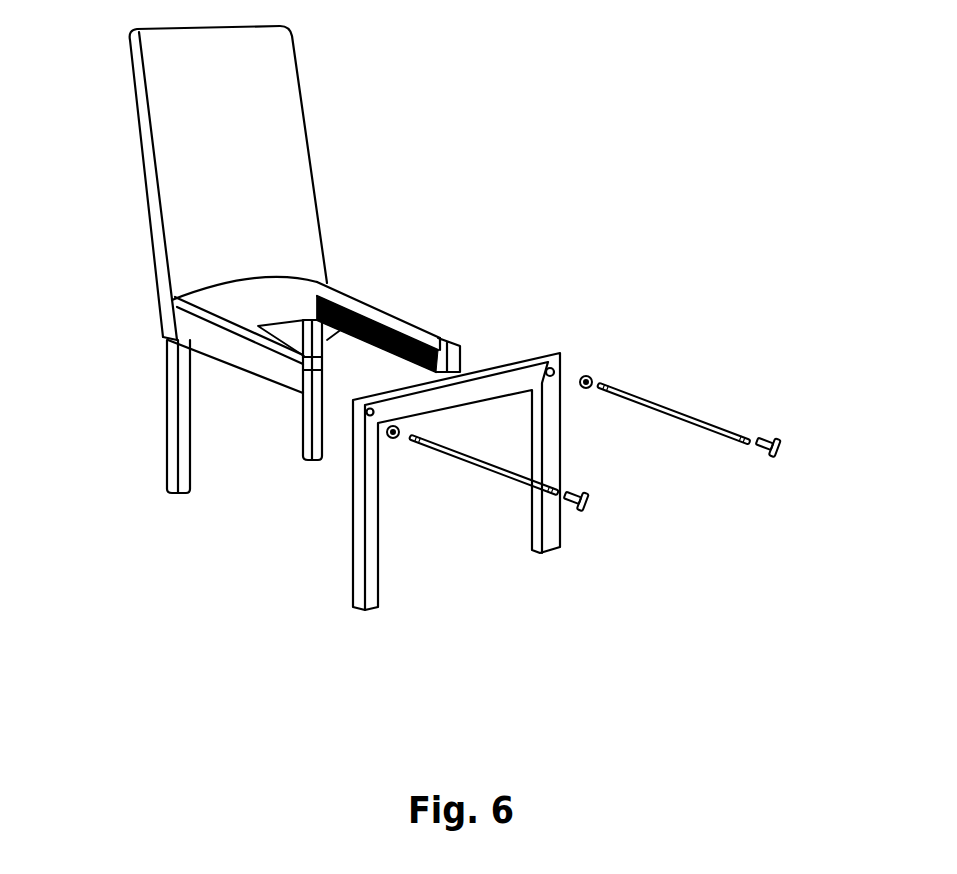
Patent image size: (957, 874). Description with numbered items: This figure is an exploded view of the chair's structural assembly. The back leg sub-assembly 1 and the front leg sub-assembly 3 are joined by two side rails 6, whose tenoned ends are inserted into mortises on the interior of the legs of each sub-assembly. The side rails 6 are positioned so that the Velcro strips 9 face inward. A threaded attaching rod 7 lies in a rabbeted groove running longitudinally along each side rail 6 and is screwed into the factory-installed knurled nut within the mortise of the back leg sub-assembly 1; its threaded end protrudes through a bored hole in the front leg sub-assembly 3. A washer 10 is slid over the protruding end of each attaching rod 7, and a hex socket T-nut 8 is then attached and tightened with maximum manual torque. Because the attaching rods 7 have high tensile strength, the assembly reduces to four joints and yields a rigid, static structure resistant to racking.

The back leg sub-assembly 1 is at (183, 407).
The front leg sub-assembly 3 is at (350, 490).
The side rail 6 is at (353, 308).
The attaching rod 7 is at (477, 457).
The hex socket T-nut 8 is at (590, 513).
The Velcro strips 9 is at (395, 335).
The washer 10 is at (395, 437).